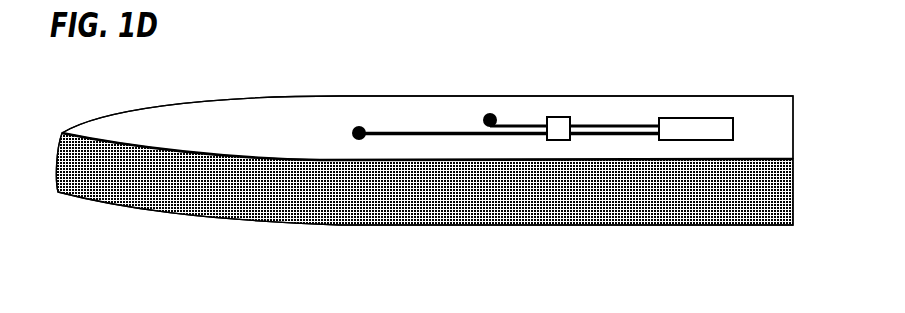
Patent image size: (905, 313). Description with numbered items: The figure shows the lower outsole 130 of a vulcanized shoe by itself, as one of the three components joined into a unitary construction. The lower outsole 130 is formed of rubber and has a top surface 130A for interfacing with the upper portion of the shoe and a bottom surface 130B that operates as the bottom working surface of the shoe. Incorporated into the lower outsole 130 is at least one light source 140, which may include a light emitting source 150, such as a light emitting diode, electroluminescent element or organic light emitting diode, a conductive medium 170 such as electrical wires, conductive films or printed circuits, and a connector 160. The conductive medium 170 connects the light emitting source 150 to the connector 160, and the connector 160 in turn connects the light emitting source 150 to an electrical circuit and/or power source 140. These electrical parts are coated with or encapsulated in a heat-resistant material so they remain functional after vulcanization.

The lower outsole 130 is at (424, 125).
The top surface 130A is at (157, 123).
The bottom surface 130B is at (487, 244).
The light source 140 is at (695, 113).
The light emitting source 150 is at (360, 116).
The connector 160 is at (557, 115).
The conductive medium 170 is at (432, 118).